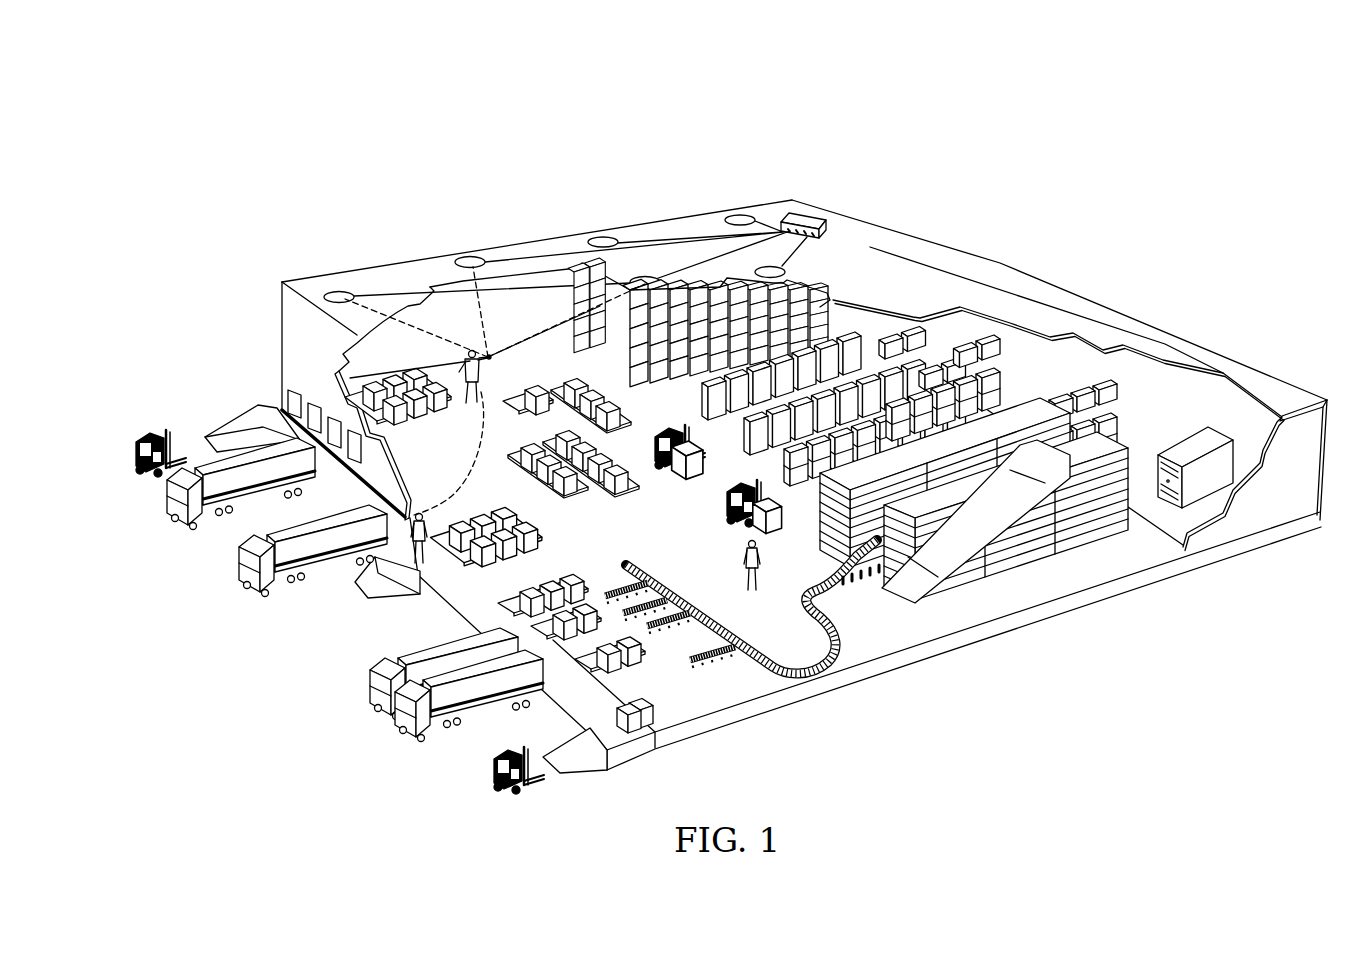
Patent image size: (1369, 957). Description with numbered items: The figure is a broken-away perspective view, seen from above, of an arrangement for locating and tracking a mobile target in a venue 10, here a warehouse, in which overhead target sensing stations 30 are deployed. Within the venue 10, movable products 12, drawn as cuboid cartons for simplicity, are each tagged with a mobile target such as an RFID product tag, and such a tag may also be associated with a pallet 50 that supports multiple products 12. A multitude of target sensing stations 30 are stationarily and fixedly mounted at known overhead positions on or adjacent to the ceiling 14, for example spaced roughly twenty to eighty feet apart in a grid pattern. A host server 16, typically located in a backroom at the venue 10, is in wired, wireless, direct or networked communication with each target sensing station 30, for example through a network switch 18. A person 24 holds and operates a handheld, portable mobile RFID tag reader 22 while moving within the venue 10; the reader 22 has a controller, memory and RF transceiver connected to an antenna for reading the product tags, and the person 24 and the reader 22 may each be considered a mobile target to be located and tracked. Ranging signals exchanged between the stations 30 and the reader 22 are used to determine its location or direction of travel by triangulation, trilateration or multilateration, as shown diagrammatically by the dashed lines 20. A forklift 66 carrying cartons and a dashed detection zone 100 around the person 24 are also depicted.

The venue 10 is at (977, 246).
The products 12 is at (524, 418).
The ceiling 14 is at (842, 262).
The host server 16 is at (1220, 430).
The network switch 18 is at (808, 217).
The dashed lines 20 is at (420, 321).
The mobile RFID tag reader 22 is at (489, 352).
The person 24 is at (470, 408).
The target sensing stations 30 is at (343, 297).
The pallet 50 is at (521, 395).
The forklift 66 is at (738, 517).
The detection zone 100 is at (463, 479).